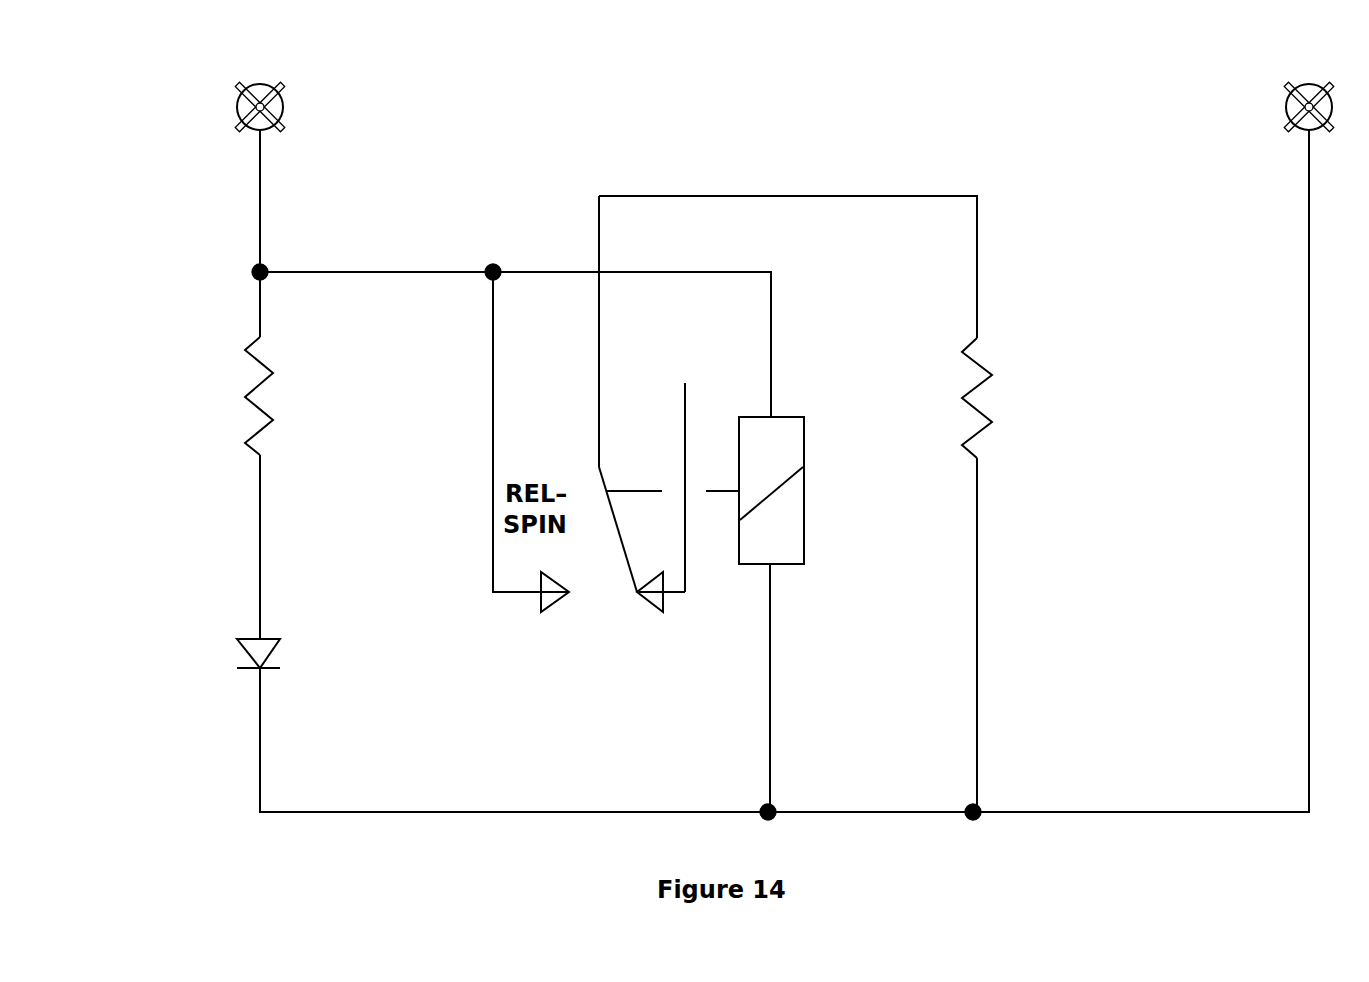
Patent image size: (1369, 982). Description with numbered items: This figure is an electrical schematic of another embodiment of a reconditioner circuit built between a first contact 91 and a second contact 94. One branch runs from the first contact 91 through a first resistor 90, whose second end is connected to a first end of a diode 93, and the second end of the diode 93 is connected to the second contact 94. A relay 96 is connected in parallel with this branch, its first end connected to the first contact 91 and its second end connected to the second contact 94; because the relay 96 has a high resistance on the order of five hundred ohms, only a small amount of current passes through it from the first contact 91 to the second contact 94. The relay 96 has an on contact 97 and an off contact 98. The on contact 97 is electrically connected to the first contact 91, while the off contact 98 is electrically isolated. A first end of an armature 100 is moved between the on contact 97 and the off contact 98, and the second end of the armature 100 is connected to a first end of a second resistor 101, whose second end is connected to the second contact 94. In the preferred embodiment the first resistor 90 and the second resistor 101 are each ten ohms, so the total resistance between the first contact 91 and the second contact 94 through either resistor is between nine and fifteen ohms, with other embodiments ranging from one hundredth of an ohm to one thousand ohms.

The first resistor 90 is at (263, 362).
The first contact 91 is at (237, 108).
The diode 93 is at (273, 652).
The second contact 94 is at (1285, 107).
The relay 96 is at (807, 537).
The on contact 97 is at (553, 612).
The off contact 98 is at (645, 605).
The armature 100 is at (623, 572).
The second resistor 101 is at (975, 387).